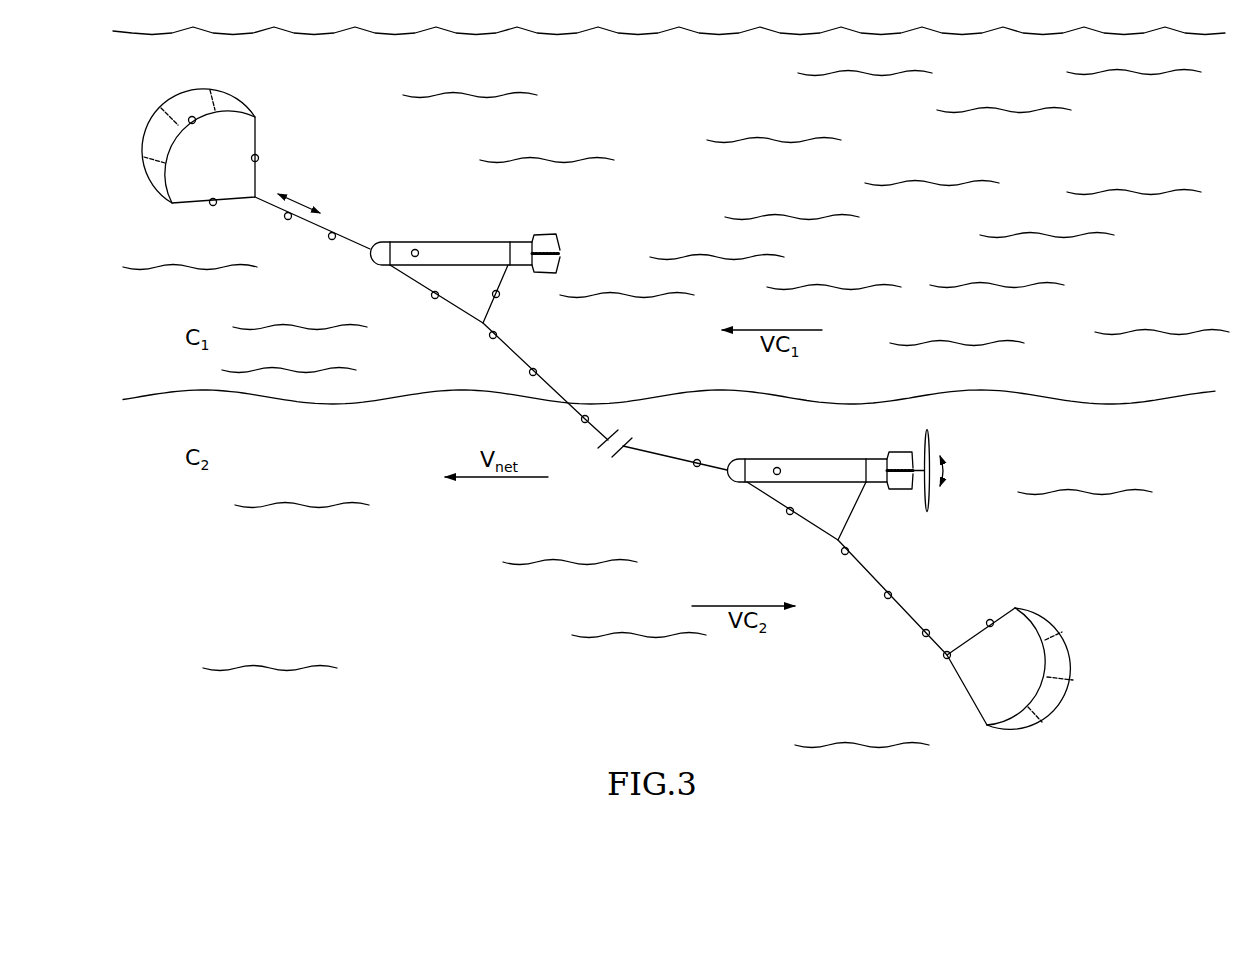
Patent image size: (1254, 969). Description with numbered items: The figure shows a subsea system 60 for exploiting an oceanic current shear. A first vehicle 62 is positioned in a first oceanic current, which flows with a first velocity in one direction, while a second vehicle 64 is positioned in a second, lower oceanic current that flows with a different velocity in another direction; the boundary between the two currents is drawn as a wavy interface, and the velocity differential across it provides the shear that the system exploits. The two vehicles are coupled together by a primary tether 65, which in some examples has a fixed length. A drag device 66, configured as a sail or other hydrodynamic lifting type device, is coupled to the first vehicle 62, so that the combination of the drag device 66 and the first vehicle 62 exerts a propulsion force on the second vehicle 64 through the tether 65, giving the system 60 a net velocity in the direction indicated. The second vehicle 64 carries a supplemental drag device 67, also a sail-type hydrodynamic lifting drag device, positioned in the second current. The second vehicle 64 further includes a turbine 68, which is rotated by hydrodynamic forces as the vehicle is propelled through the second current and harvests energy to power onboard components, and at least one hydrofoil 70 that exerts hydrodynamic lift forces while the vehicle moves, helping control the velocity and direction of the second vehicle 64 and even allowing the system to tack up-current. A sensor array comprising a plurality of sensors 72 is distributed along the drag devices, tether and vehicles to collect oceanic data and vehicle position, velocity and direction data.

The subsea system 60 is at (640, 100).
The first vehicle 62 is at (468, 219).
The second vehicle 64 is at (794, 437).
The primary tether 65 is at (660, 453).
The drag device 66 is at (278, 101).
The supplemental drag device 67 is at (1010, 745).
The turbine 68 is at (935, 438).
The hydrofoil 70 is at (907, 489).
The sensors 72 is at (259, 155).